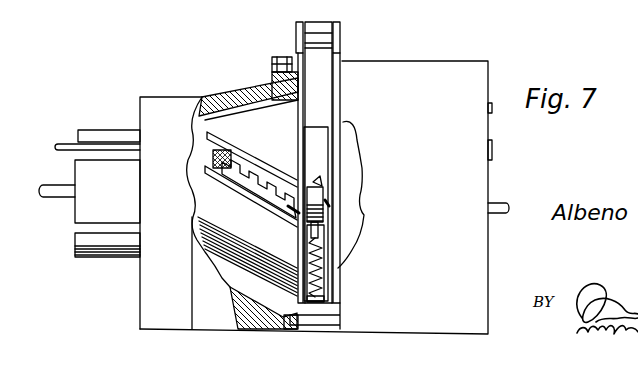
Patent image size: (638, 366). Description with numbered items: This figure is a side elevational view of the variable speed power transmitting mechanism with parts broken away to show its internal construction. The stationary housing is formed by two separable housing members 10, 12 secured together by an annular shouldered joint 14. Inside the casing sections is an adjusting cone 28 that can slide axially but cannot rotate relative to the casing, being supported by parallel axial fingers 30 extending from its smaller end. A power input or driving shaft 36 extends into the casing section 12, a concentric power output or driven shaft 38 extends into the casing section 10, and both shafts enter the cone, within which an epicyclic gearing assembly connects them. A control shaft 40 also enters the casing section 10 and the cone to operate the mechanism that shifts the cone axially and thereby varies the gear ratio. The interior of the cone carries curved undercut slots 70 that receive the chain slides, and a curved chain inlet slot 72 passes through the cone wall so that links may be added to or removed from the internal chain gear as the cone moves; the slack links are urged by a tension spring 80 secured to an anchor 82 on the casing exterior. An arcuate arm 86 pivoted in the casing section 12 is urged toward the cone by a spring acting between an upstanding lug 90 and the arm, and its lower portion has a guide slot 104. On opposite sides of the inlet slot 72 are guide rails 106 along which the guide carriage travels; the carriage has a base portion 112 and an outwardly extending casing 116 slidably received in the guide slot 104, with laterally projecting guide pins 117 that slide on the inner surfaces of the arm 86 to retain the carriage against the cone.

The housing member 10 is at (171, 106).
The housing member 12 is at (433, 68).
The annular shouldered joint 14 is at (288, 322).
The adjusting cone 28 is at (257, 118).
The fingers 30 is at (97, 133).
The driving shaft 36 is at (505, 202).
The driven shaft 38 is at (63, 191).
The control shaft 40 is at (66, 144).
The slots 70 is at (264, 180).
The chain inlet slot 72 is at (255, 153).
The tension spring 80 is at (316, 272).
The anchor 82 is at (320, 298).
The arcuate arm 86 is at (327, 89).
The lug 90 is at (295, 47).
The guide slot 104 is at (322, 140).
The guide rails 106 is at (218, 139).
The base portion 112 is at (323, 178).
The casing 116 is at (322, 215).
The guide pins 117 is at (330, 203).